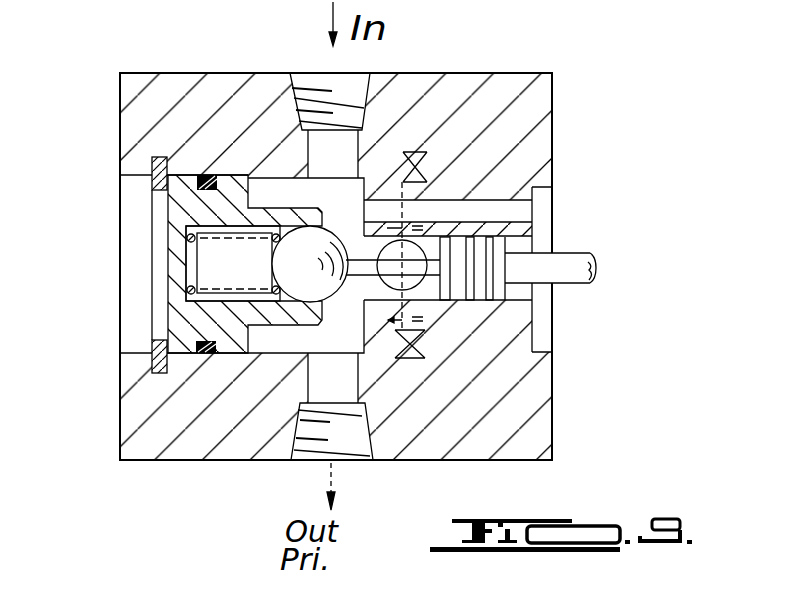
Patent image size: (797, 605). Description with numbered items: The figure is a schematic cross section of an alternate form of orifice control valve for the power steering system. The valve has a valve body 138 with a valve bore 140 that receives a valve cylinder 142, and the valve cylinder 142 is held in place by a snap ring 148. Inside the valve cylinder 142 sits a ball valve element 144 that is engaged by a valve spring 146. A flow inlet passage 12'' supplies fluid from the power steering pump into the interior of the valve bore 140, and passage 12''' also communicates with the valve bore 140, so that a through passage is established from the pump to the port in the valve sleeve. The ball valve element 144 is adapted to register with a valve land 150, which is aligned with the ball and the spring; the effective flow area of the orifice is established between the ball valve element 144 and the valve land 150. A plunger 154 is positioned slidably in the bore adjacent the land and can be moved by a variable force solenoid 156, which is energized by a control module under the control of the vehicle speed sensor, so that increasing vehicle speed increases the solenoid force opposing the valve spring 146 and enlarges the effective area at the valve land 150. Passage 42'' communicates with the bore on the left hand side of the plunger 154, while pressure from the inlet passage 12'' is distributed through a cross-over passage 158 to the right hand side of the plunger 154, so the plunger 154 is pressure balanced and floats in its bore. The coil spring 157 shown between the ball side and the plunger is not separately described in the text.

The valve body 138 is at (217, 88).
The valve bore 140 is at (265, 182).
The valve cylinder 142 is at (231, 342).
The ball valve element 144 is at (330, 285).
The valve spring 146 is at (185, 250).
The snap ring 148 is at (152, 183).
The valve land 150 is at (373, 290).
The plunger 154 is at (490, 290).
The variable force solenoid 156 is at (568, 253).
The spring 157 is at (450, 235).
The cross-over passage 158 is at (440, 203).
The flow inlet passage 12'' is at (362, 125).
The passage 12''' is at (300, 406).
The passage 42'' is at (417, 255).